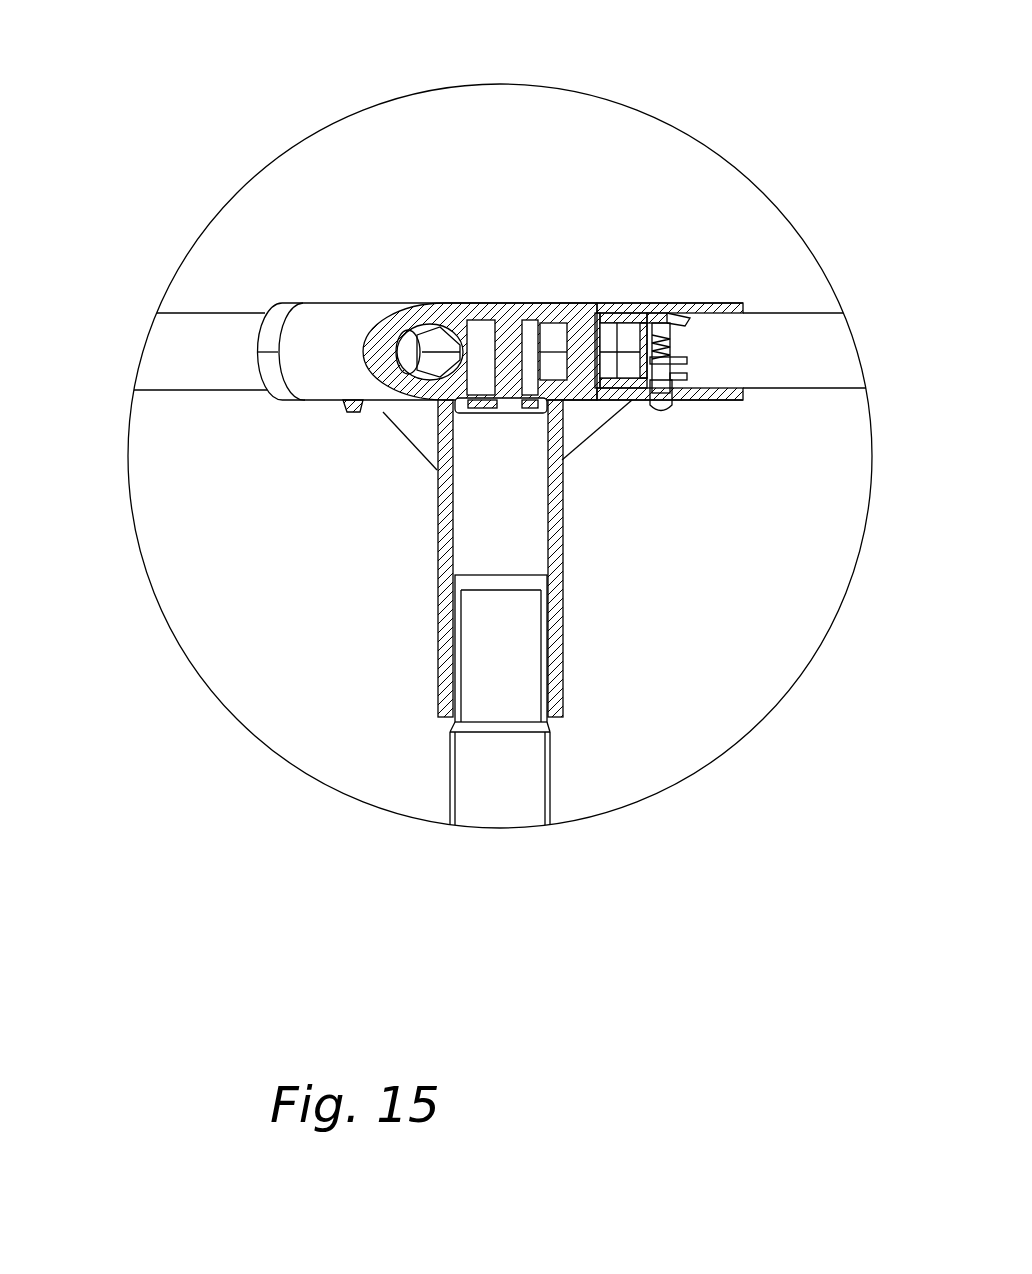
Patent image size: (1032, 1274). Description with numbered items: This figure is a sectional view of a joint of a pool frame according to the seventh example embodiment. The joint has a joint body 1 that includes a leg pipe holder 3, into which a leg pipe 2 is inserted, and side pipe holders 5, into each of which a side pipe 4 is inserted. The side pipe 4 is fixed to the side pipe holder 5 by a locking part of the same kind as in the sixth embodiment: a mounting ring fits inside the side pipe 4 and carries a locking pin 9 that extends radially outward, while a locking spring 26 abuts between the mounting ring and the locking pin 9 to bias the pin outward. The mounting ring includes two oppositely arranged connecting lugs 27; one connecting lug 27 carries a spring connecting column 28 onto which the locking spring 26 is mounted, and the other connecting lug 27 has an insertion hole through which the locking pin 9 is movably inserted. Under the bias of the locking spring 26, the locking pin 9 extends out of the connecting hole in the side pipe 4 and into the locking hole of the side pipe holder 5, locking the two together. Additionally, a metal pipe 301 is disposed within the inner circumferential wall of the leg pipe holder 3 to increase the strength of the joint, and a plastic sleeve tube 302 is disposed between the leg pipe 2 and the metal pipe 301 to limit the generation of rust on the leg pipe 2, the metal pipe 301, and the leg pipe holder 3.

The joint body 1 is at (438, 235).
The leg pipe 2 is at (331, 787).
The leg pipe holder 3 is at (290, 581).
The side pipe 4 is at (804, 263).
The side pipe holder 5 is at (671, 181).
The locking pin 9 is at (792, 520).
The locking spring 26 is at (792, 409).
The connecting lug 27 is at (557, 203).
The spring connecting column 28 is at (729, 246).
The metal pipe 301 is at (646, 704).
The plastic sleeve tube 302 is at (619, 810).